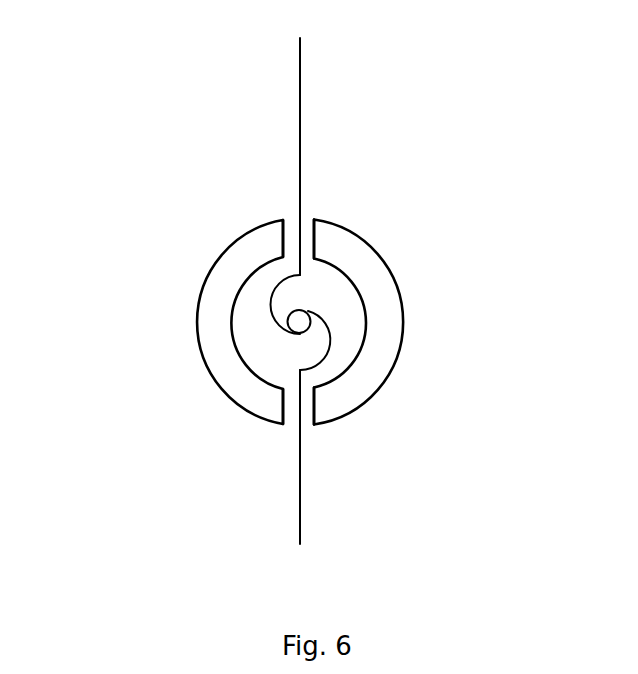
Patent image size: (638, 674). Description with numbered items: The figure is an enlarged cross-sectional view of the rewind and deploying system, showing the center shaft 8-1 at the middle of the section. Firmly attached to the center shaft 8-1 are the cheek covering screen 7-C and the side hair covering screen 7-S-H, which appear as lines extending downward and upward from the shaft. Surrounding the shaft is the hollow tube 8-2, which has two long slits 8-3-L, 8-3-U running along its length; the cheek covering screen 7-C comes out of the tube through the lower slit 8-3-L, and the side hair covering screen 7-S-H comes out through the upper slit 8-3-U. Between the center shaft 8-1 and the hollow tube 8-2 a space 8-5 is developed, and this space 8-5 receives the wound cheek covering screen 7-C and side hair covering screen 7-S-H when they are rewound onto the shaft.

The side hair covering screen 7-S-H is at (300, 95).
The cheek covering screen 7-C is at (298, 495).
The space 8-5 is at (257, 323).
The hollow tube 8-2 is at (365, 375).
The center shaft 8-1 is at (300, 320).
The slit 8-3-U is at (305, 240).
The slit 8-3-L is at (303, 408).